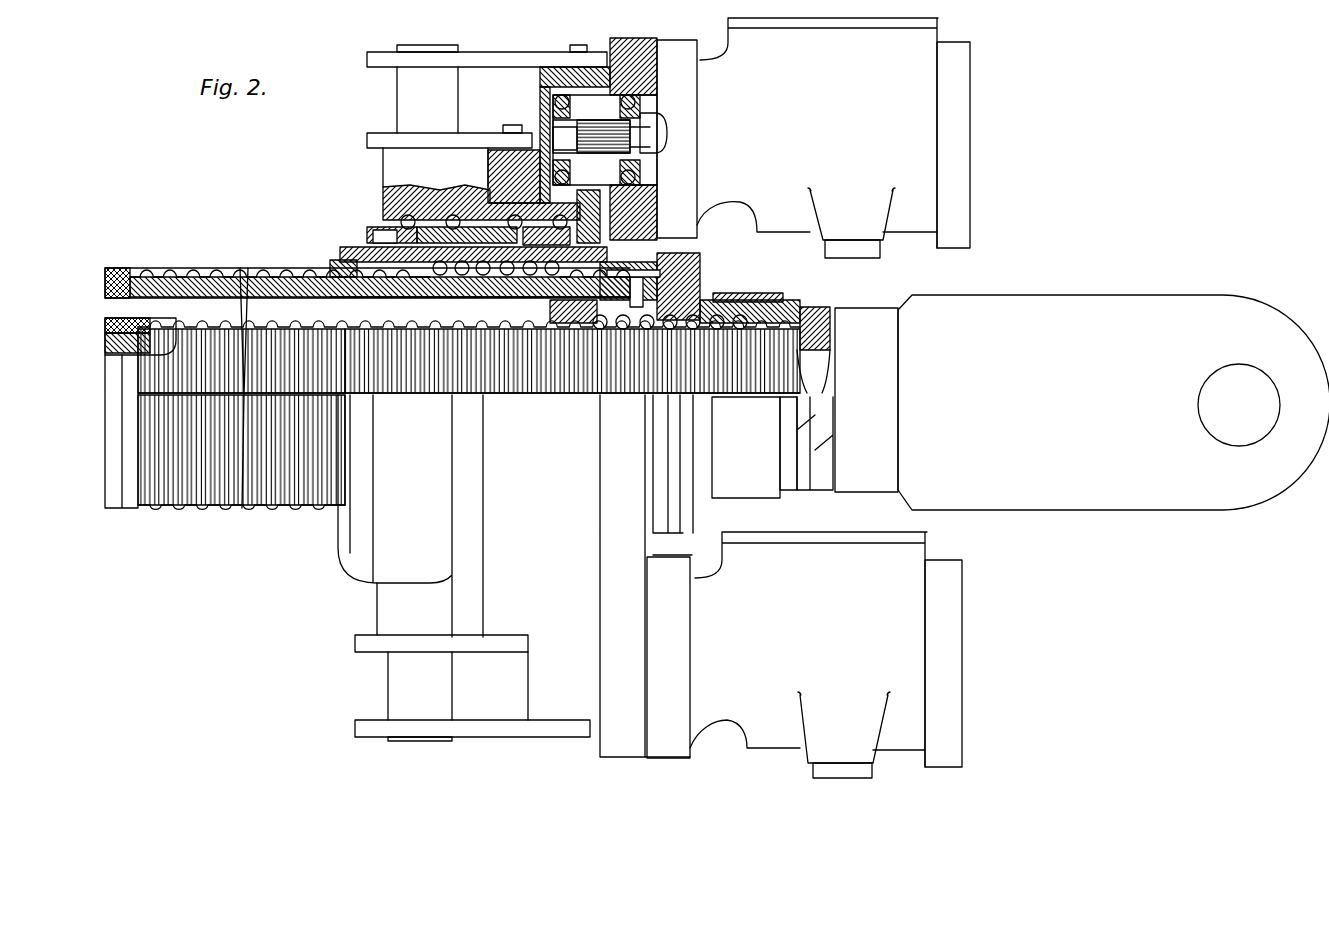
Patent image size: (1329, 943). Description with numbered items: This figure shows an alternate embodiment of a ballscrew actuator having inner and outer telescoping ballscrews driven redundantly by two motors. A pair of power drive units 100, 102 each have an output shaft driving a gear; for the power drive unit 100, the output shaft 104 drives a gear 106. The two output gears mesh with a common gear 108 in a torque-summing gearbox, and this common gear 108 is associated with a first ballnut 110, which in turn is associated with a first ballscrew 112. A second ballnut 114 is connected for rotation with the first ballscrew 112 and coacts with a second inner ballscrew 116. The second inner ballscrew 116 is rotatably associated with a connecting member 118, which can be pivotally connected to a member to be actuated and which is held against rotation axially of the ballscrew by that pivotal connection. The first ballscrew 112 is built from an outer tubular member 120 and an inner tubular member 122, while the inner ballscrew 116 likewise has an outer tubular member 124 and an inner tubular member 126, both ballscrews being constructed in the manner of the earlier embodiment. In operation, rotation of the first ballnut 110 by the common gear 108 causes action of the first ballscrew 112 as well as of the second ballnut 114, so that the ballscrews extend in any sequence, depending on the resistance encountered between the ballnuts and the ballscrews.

The power drive unit 100 is at (912, 120).
The power drive unit 102 is at (905, 614).
The output shaft 104 is at (658, 136).
The gear 106 is at (655, 112).
The common gear 108 is at (598, 213).
The first ballnut 110 is at (400, 258).
The first ballscrew 112 is at (257, 273).
The second ballnut 114 is at (706, 283).
The second inner ballscrew 116 is at (198, 319).
The connecting member 118 is at (1077, 305).
The outer tubular member 120 is at (170, 266).
The inner tubular member 122 is at (120, 288).
The outer tubular member 124 is at (380, 297).
The inner tubular member 126 is at (115, 344).